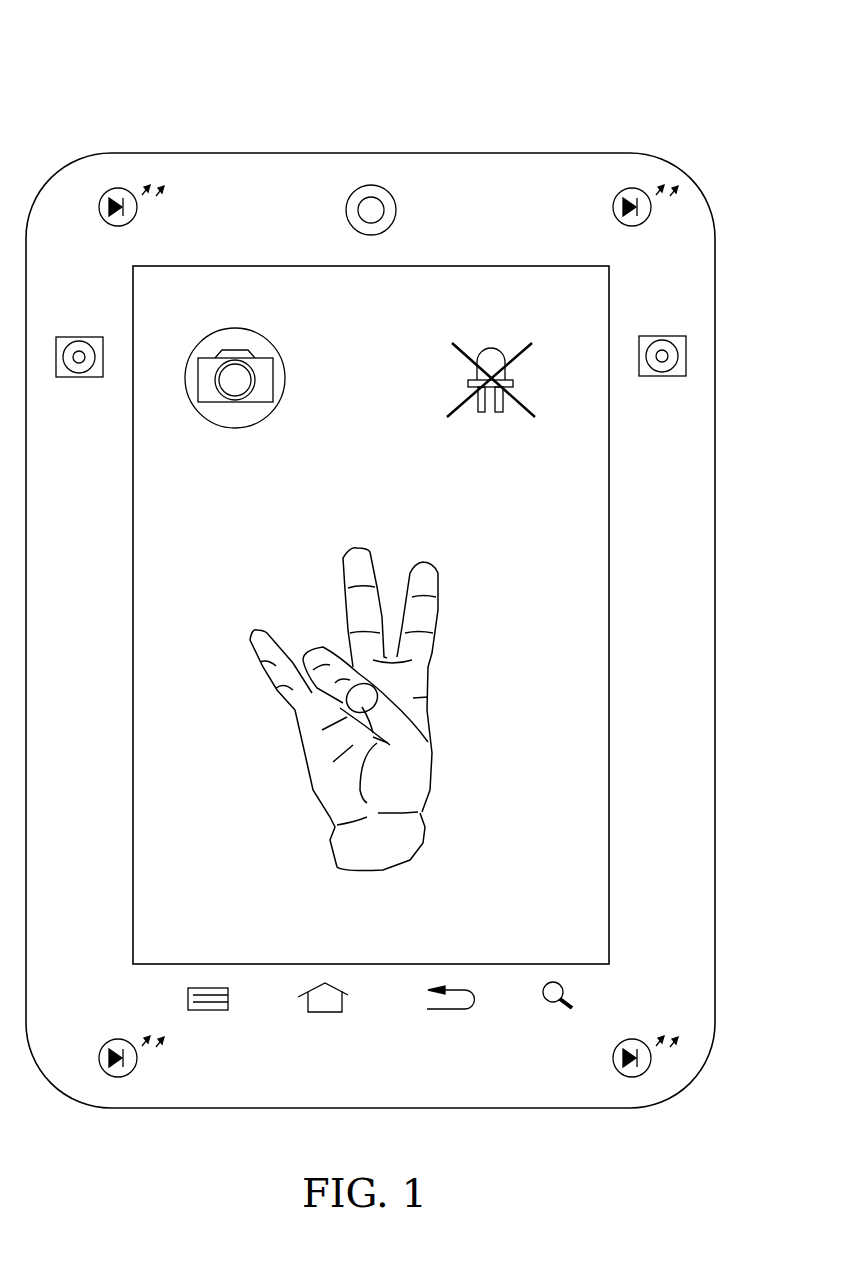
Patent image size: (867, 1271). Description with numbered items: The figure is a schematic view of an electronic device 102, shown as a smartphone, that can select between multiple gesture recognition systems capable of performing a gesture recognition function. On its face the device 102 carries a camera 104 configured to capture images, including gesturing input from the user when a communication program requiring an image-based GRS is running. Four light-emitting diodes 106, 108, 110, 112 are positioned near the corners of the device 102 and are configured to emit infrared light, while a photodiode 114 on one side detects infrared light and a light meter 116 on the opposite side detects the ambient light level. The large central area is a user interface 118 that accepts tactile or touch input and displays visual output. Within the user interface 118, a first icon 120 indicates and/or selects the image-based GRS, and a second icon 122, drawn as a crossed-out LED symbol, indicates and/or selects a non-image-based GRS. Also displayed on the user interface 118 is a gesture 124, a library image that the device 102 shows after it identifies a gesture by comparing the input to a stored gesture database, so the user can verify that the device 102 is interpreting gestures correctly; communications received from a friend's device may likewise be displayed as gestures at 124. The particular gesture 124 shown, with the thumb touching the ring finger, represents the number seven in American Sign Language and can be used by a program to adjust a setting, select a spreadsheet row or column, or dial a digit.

The electronic device 102 is at (628, 80).
The camera 104 is at (396, 212).
The light-emitting diode 106 is at (137, 211).
The light-emitting diode 108 is at (613, 210).
The light-emitting diode 110 is at (631, 1040).
The light-emitting diode 112 is at (123, 1040).
The photodiode 114 is at (82, 336).
The light meter 116 is at (658, 335).
The user interface 118 is at (142, 545).
The first icon 120 is at (285, 378).
The second icon 122 is at (513, 383).
The gesture 124 is at (307, 771).